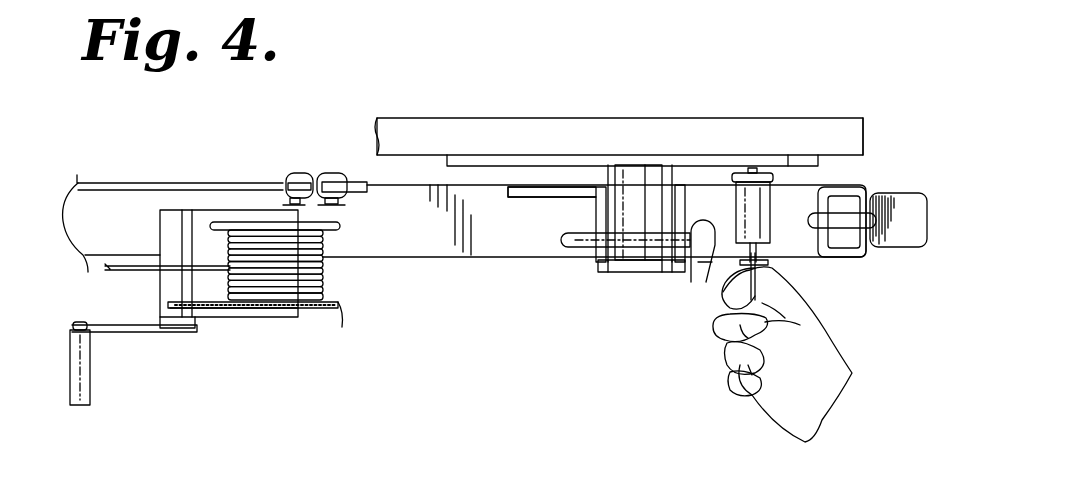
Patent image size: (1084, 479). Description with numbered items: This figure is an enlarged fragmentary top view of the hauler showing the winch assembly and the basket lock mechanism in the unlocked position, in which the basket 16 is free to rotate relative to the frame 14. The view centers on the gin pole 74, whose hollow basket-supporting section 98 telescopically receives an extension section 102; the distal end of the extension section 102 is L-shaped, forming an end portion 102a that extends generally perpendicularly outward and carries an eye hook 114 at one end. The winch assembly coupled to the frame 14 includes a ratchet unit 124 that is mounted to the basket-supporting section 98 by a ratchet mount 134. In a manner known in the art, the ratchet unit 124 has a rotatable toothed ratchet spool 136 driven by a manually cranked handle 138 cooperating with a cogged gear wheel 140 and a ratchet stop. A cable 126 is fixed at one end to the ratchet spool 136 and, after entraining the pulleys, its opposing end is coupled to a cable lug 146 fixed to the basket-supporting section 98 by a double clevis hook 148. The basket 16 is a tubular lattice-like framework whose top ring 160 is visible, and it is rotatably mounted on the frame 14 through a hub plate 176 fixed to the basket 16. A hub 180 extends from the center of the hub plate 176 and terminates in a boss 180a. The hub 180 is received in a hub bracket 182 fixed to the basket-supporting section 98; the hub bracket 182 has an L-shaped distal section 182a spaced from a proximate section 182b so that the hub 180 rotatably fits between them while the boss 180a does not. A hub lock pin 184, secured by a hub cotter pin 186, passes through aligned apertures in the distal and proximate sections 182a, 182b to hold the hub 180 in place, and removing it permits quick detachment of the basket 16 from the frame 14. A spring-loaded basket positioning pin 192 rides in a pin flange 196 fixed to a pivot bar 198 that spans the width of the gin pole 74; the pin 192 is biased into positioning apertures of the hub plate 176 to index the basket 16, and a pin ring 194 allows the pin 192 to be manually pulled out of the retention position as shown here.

The frame 14 is at (428, 260).
The basket 16 is at (618, 113).
The gin pole 74 is at (523, 260).
The basket-supporting section 98 is at (494, 250).
The extension section 102 is at (848, 242).
The end portion 102a is at (908, 237).
The eye hook 114 is at (879, 170).
The ratchet unit 124 is at (282, 330).
The cable 126 is at (72, 225).
The ratchet mount 134 is at (170, 285).
The ratchet spool 136 is at (343, 325).
The handle 138 is at (90, 372).
The cogged gear wheel 140 is at (178, 296).
The cable lug 146 is at (360, 182).
The double clevis hook 148 is at (316, 178).
The top ring 160 is at (672, 133).
The hub plate 176 is at (458, 156).
The hub 180 is at (620, 164).
The boss 180a is at (615, 276).
The hub bracket 182 is at (588, 208).
The distal section 182a is at (529, 186).
The proximate section 182b is at (686, 186).
The hub lock pin 184 is at (580, 248).
The hub cotter pin 186 is at (700, 275).
The basket positioning pin 192 is at (764, 262).
The pin ring 194 is at (735, 280).
The pin flange 196 is at (765, 200).
The pivot bar 198 is at (760, 170).